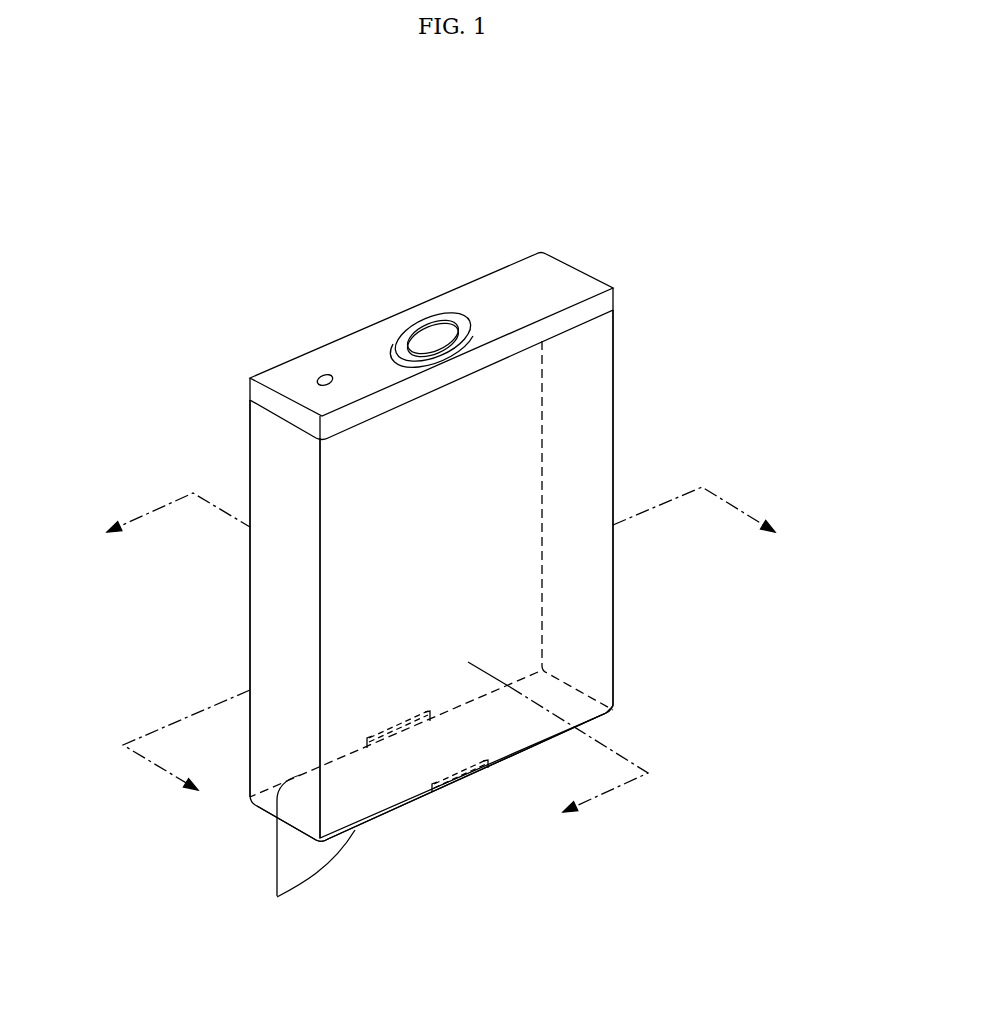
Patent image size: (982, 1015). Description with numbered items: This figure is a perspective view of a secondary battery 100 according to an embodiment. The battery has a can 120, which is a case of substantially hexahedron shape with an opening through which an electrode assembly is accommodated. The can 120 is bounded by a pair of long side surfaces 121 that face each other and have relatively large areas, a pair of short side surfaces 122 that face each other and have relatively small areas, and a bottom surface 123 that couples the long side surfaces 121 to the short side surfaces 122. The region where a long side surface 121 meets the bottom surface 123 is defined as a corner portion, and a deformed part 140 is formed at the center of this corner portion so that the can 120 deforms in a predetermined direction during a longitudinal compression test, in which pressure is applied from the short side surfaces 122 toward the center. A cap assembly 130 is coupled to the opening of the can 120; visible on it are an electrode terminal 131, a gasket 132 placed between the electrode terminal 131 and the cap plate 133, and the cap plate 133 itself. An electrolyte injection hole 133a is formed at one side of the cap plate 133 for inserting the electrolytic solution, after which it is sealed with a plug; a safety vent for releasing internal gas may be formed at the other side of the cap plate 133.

The secondary battery 100 is at (718, 174).
The can 120 is at (630, 346).
The long side surfaces 121 is at (342, 468).
The short side surfaces 122 is at (297, 598).
The bottom surface 123 is at (382, 803).
The cap assembly 130 is at (484, 265).
The electrode terminal 131 is at (432, 325).
The gasket 132 is at (393, 327).
The cap plate 133 is at (568, 280).
The electrolyte injection hole 133a is at (322, 378).
The deformed part 140 is at (458, 782).